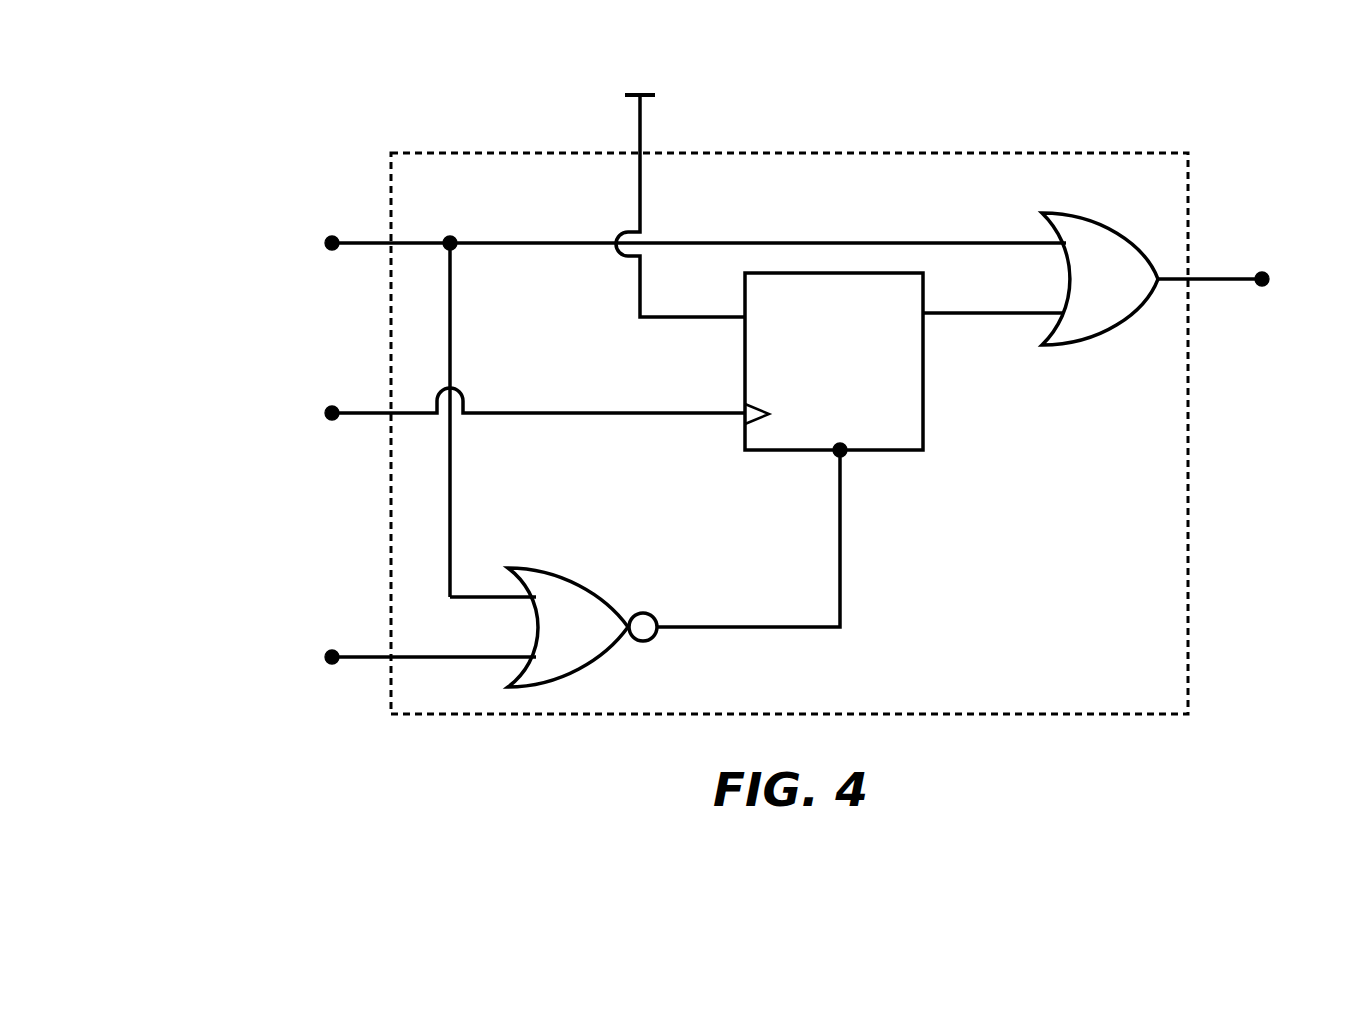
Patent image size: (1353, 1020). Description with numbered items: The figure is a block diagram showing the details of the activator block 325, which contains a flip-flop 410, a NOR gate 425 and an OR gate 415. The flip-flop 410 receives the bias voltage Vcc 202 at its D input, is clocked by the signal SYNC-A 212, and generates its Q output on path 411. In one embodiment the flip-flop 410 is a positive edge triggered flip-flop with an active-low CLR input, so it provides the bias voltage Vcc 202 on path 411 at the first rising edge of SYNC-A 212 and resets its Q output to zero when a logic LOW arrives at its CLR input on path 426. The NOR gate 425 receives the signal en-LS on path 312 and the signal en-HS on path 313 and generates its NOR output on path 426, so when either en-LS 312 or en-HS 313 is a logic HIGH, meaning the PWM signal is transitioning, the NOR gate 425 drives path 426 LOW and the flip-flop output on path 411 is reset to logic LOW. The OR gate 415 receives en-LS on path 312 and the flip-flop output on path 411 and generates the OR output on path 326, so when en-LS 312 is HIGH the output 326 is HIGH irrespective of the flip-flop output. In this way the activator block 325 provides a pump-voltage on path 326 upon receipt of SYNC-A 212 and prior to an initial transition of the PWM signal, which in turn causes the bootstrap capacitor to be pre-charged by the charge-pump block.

The bias voltage Vcc 202 is at (666, 189).
The en-LS signal path 312 is at (350, 243).
The SYNC-A signal 212 is at (350, 413).
The en-HS signal path 313 is at (353, 657).
The activator block 325 is at (1180, 705).
The flip-flop 410 is at (921, 395).
The flip-flop output path 411 is at (958, 315).
The OR gate 415 is at (1098, 343).
The output path 326 is at (1207, 281).
The NOR gate 425 is at (587, 580).
The NOR output path 426 is at (840, 594).